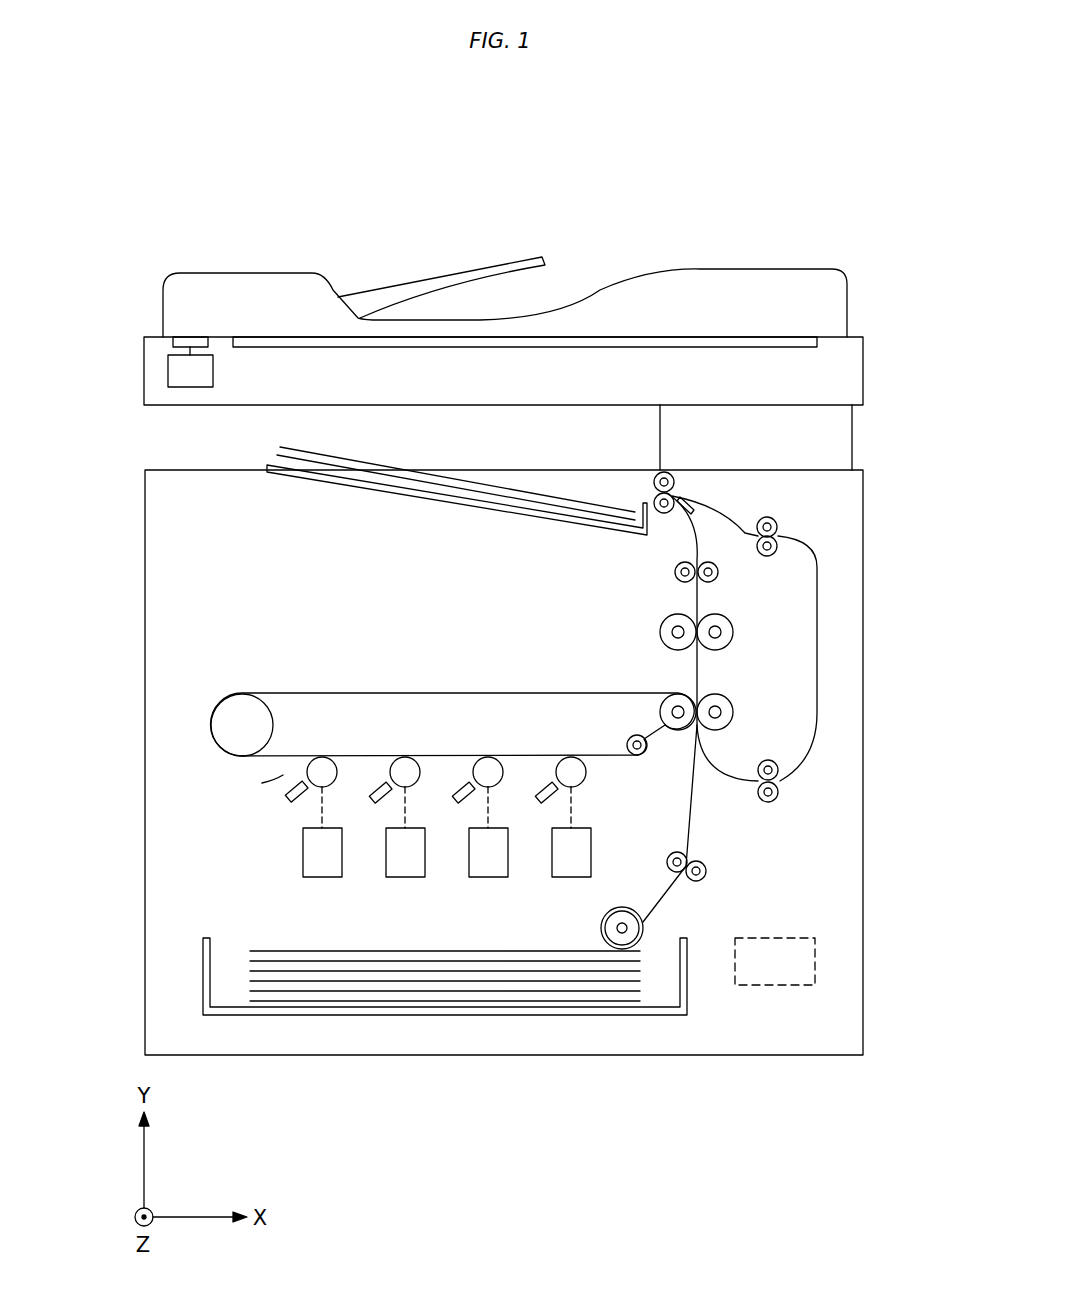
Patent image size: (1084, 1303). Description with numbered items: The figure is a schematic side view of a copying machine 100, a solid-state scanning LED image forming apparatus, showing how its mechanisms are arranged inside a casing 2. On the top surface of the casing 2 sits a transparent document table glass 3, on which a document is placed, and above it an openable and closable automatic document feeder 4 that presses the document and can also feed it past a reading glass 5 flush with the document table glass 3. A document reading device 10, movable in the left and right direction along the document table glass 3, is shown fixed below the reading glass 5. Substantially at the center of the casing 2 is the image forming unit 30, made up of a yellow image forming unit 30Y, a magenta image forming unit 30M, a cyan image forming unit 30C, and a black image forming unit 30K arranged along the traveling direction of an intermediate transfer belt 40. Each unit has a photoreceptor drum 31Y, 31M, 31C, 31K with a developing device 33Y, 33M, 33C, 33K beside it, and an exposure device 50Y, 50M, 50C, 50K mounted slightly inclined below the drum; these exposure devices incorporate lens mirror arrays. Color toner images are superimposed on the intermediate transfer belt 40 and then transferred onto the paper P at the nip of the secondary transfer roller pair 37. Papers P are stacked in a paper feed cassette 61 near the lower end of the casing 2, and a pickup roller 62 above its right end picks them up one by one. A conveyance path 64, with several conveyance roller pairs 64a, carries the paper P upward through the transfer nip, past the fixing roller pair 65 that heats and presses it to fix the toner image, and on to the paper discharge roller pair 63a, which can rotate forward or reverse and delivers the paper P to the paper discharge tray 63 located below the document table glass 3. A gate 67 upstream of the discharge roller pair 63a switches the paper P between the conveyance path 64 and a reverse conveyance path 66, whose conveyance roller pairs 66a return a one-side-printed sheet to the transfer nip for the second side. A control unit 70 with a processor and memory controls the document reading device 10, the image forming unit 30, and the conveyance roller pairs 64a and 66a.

The copying machine 100 is at (528, 160).
The casing 2 is at (144, 545).
The document table glass 3 is at (687, 336).
The automatic document feeder 4 is at (258, 278).
The reading glass 5 is at (188, 340).
The document reading device 10 is at (178, 368).
The image forming unit 30 is at (453, 741).
The yellow image forming unit 30Y is at (250, 781).
The magenta image forming unit 30M is at (362, 745).
The cyan image forming unit 30C is at (515, 745).
The black image forming unit 30K is at (601, 745).
The photoreceptor drum 31Y is at (322, 757).
The photoreceptor drum 31M is at (405, 757).
The photoreceptor drum 31C is at (488, 757).
The photoreceptor drum 31K is at (571, 757).
The developing device 33Y is at (288, 800).
The developing device 33M is at (373, 800).
The developing device 33C is at (456, 800).
The developing device 33K is at (539, 800).
The secondary transfer roller pair 37 is at (685, 692).
The intermediate transfer belt 40 is at (455, 692).
The exposure device 50Y is at (322, 880).
The exposure device 50M is at (405, 880).
The exposure device 50C is at (488, 880).
The exposure device 50K is at (571, 880).
The paper feed cassette 61 is at (202, 965).
The pickup roller 62 is at (622, 906).
The paper discharge tray 63 is at (350, 482).
The paper discharge roller pair 63a is at (655, 478).
The conveyance path 64 is at (699, 820).
The conveyance roller pairs 64a is at (672, 572).
The fixing roller pair 65 is at (685, 612).
The reverse conveyance path 66 is at (818, 660).
The conveyance roller pairs 66a is at (778, 522).
The gate 67 is at (698, 500).
The control unit 70 is at (770, 986).
The paper P is at (540, 500).